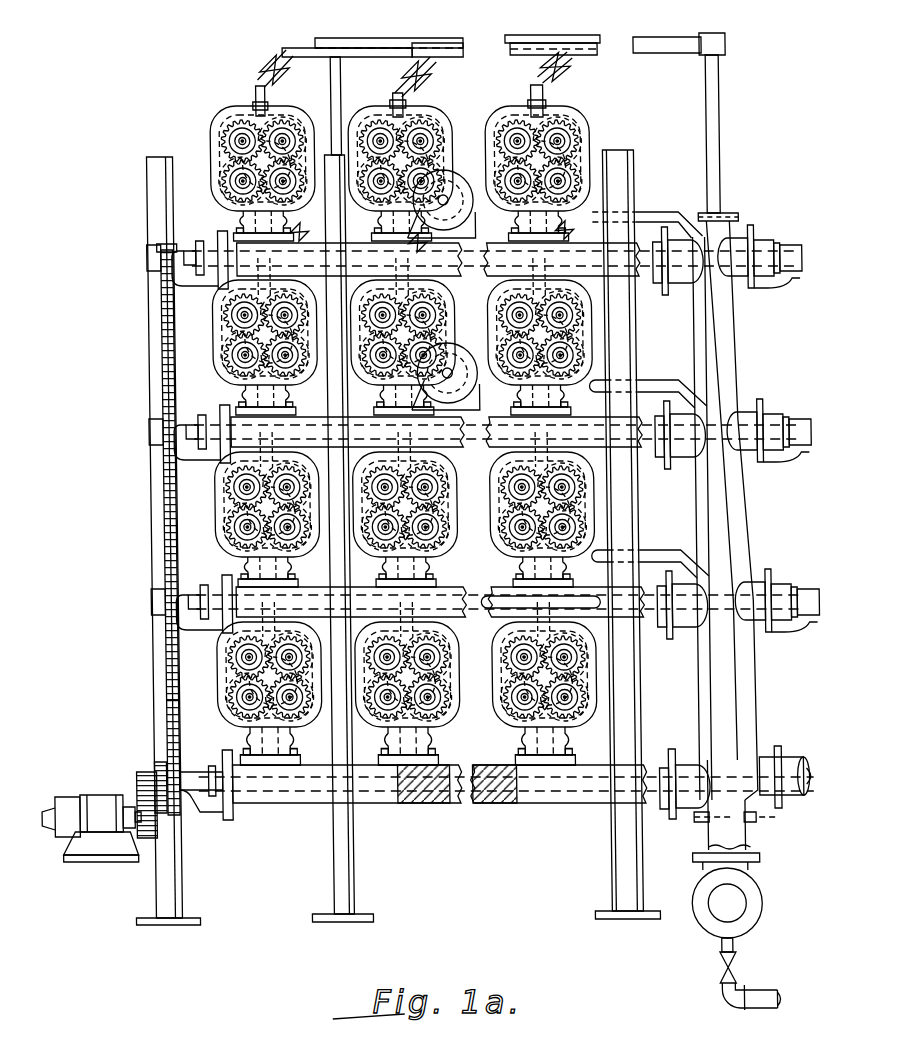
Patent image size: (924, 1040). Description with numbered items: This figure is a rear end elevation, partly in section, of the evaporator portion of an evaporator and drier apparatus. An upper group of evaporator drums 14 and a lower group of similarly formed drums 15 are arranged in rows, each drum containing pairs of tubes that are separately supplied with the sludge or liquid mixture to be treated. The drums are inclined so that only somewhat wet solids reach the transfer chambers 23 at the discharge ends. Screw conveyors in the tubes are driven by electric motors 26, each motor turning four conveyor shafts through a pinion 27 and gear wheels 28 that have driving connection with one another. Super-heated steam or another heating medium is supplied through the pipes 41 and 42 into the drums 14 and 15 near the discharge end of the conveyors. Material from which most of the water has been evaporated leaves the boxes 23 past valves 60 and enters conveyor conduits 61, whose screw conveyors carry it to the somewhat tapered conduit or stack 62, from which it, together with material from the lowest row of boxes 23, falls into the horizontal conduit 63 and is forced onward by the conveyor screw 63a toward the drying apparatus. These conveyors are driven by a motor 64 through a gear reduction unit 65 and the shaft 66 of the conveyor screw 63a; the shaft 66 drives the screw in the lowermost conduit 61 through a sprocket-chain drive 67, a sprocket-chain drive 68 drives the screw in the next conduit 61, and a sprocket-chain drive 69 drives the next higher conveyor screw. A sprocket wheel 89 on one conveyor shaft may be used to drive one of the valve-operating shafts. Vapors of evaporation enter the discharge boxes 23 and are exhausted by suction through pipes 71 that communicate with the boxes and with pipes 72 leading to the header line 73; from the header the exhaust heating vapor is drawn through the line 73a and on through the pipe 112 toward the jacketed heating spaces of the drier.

The evaporator drums 14 is at (227, 116).
The evaporator drums 15 is at (218, 534).
The transfer chambers 23 is at (578, 104).
The electric motors 26 is at (457, 178).
The pinion 27 is at (475, 205).
The gear wheels 28 is at (445, 120).
The pipe 41 is at (358, 44).
The pipe 42 is at (343, 101).
The valves 60 is at (525, 563).
The conveyor conduits 61 is at (442, 312).
The conduit or stack 62 is at (753, 490).
The horizontal conduit 63 is at (538, 803).
The conveyor screw 63a is at (425, 800).
The motor 64 is at (95, 805).
The gear reduction unit 65 is at (143, 840).
The shaft 66 is at (195, 820).
The sprocket-chain drive 67 is at (163, 720).
The sprocket-chain drive 68 is at (160, 498).
The sprocket-chain drive 69 is at (160, 366).
The pipes 71 is at (300, 62).
The pipes 72 is at (553, 50).
The header line 73 is at (726, 140).
The line 73a is at (757, 887).
The sprocket wheel 89 is at (150, 768).
The pipe 112 is at (757, 990).